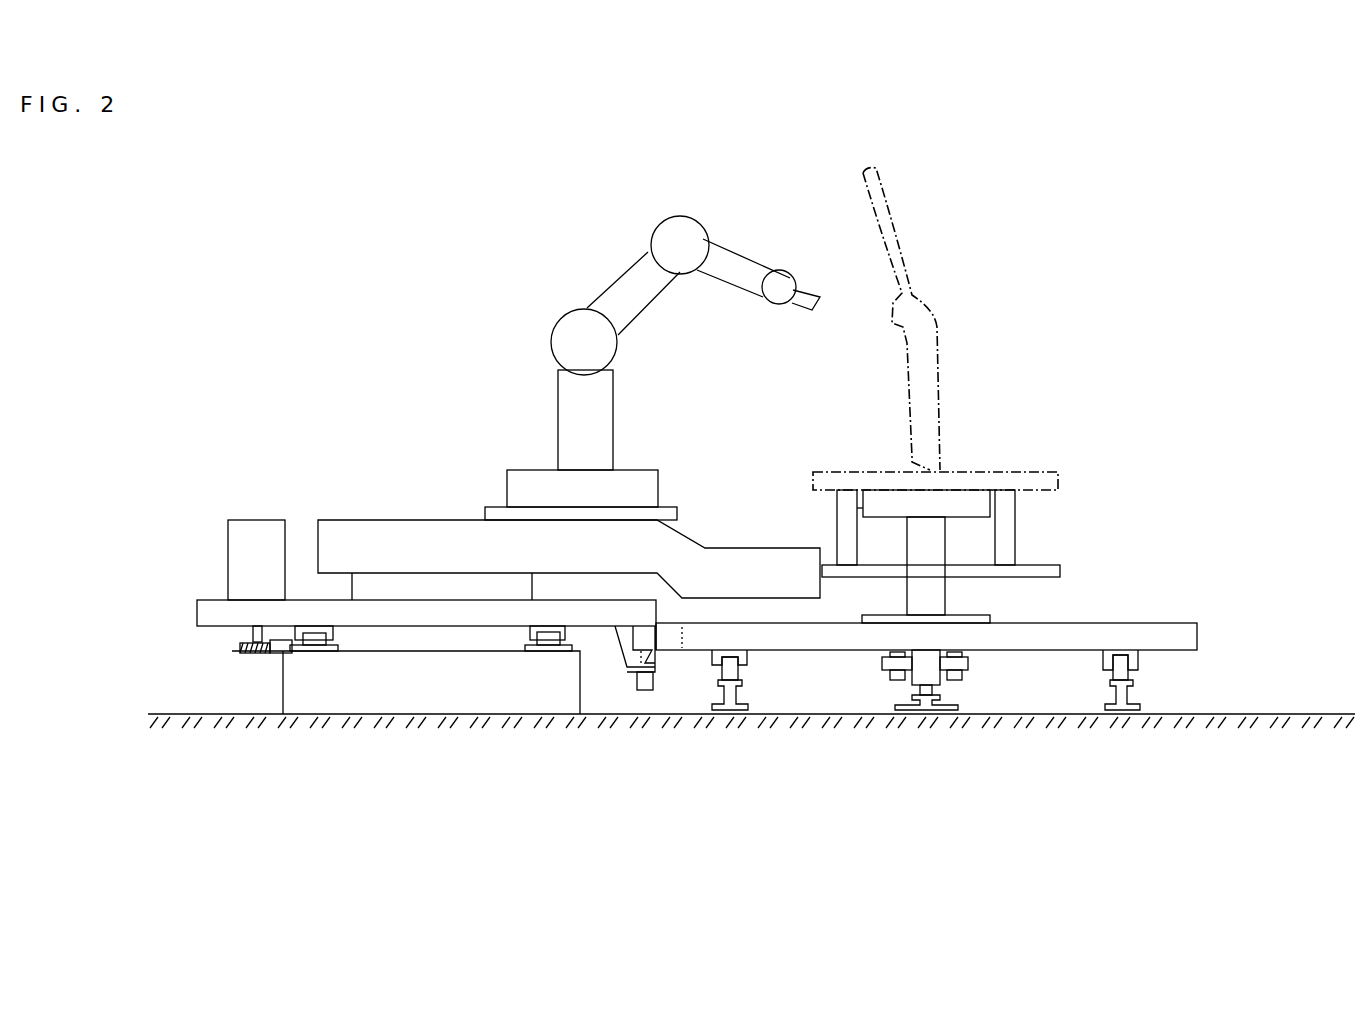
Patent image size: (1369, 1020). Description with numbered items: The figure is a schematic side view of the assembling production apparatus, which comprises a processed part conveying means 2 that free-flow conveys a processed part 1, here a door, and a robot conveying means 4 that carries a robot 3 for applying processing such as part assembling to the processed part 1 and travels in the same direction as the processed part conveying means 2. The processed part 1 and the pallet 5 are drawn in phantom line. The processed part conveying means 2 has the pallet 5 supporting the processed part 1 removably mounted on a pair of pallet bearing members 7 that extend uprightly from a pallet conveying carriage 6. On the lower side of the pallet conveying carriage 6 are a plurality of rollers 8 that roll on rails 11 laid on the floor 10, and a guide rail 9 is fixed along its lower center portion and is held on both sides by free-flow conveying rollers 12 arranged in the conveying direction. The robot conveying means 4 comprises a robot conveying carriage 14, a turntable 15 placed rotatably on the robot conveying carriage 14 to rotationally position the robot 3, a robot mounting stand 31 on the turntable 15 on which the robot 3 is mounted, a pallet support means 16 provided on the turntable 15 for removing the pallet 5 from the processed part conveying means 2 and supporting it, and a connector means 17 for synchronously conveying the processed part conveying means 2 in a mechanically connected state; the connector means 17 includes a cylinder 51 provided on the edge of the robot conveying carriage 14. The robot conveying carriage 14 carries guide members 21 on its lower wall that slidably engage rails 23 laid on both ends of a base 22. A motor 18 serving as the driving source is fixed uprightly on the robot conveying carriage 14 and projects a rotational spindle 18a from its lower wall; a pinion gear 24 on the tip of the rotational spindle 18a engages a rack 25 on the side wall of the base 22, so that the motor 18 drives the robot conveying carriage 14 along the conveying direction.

The processed part 1 is at (898, 228).
The processed part conveying means 2 is at (930, 566).
The robot 3 is at (617, 272).
The robot conveying means 4 is at (487, 536).
The pallet 5 is at (1058, 472).
The pallet conveying carriage 6 is at (1170, 622).
The pallet bearing member 7 is at (946, 540).
The rollers 8 is at (748, 668).
The guide rail 9 is at (940, 683).
The floor 10 is at (1265, 713).
The rails 11 is at (745, 692).
The free-flow conveying rollers 12 is at (880, 662).
The robot conveying carriage 14 is at (205, 600).
The turntable 15 is at (395, 520).
The pallet support means 16 is at (1018, 548).
The connector means 17 is at (673, 666).
The motor 18 is at (240, 520).
The rotational spindle 18a is at (250, 634).
The guide members 21 is at (333, 634).
The base 22 is at (282, 697).
The rails 23 is at (318, 648).
The pinion gear 24 is at (240, 652).
The rack 25 is at (280, 654).
The robot mounting stand 31 is at (675, 507).
The cylinder 51 is at (637, 684).